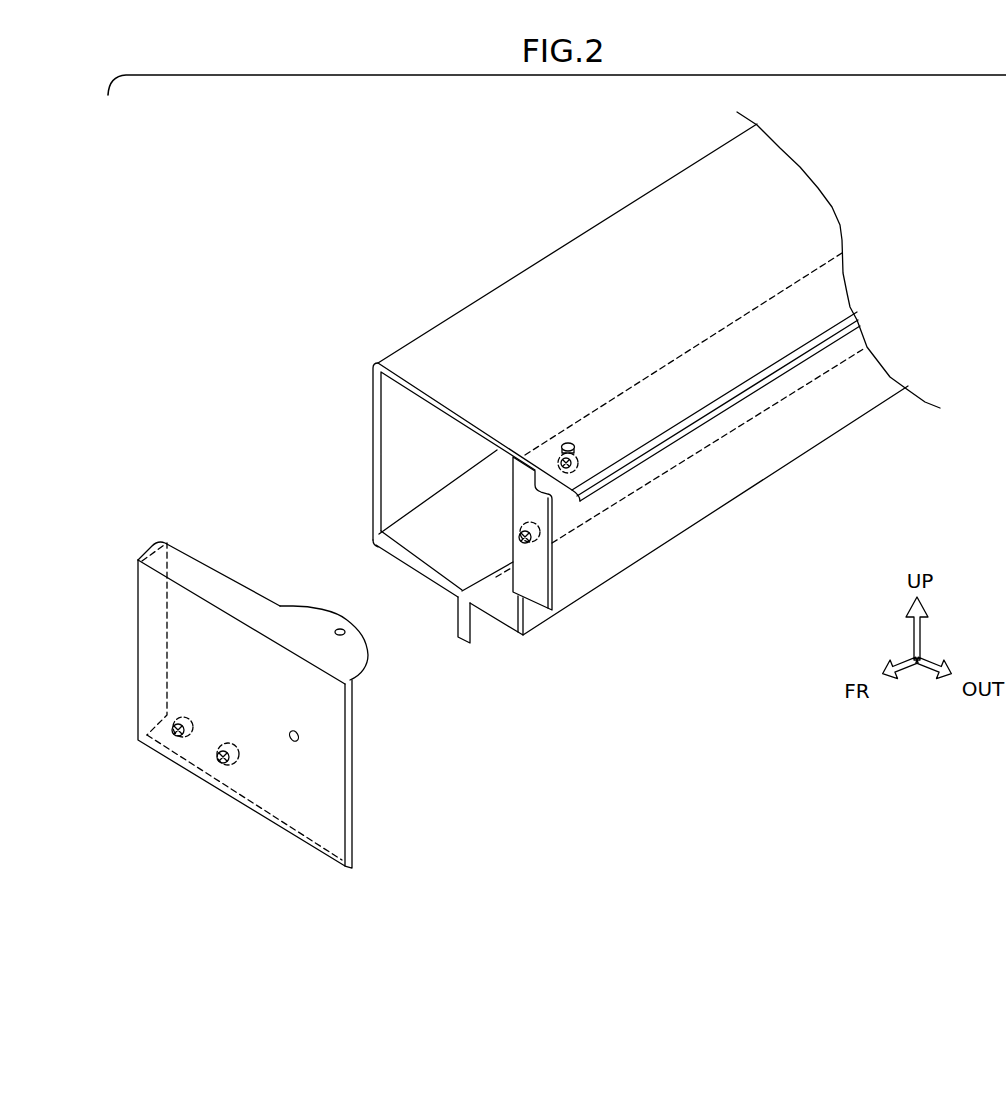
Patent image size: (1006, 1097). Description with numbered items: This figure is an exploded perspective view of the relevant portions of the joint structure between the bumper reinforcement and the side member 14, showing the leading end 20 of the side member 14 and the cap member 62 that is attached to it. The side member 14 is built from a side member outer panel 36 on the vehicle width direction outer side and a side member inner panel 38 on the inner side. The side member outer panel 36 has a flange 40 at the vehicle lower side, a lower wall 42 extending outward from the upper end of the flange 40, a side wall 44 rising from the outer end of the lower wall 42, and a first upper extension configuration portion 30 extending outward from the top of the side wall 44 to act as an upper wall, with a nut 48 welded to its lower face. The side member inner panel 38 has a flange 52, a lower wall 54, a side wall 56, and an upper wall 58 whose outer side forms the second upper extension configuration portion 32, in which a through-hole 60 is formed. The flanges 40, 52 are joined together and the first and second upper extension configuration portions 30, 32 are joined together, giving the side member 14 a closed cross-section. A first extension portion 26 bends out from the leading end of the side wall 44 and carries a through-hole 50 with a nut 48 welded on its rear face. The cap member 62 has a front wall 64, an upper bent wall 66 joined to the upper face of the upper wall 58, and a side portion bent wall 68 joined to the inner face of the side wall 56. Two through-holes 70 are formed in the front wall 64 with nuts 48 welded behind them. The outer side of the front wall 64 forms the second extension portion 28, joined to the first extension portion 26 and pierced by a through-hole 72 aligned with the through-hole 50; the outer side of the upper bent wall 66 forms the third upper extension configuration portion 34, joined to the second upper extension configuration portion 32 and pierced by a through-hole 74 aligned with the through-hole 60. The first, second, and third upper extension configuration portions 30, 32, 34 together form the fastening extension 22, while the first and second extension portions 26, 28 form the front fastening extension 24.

The side member 14 is at (530, 226).
The leading end 20 is at (572, 594).
The fastening extension 22 is at (572, 488).
The front fastening extension 24 is at (381, 662).
The first extension portion 26 is at (540, 600).
The second extension portion 28 is at (325, 775).
The first upper extension configuration portion 30 is at (603, 490).
The second upper extension configuration portion 32 is at (587, 440).
The third upper extension configuration portion 34 is at (365, 660).
The side member outer panel 36 is at (706, 522).
The side member inner panel 38 is at (455, 308).
The flange 40 is at (486, 636).
The lower wall 42 is at (506, 634).
The side wall 44 is at (585, 578).
The nut 48 is at (582, 458).
The through-hole 50 is at (520, 540).
The flange 52 is at (457, 628).
The lower wall 54 is at (405, 562).
The side wall 56 is at (404, 430).
The upper wall 58 is at (487, 388).
The through-hole 60 is at (568, 444).
The cap member 62 is at (152, 751).
The front wall 64 is at (250, 789).
The upper bent wall 66 is at (207, 578).
The side portion bent wall 68 is at (150, 653).
The through-hole 70 is at (178, 738).
The through-hole 72 is at (294, 742).
The through-hole 74 is at (340, 627).